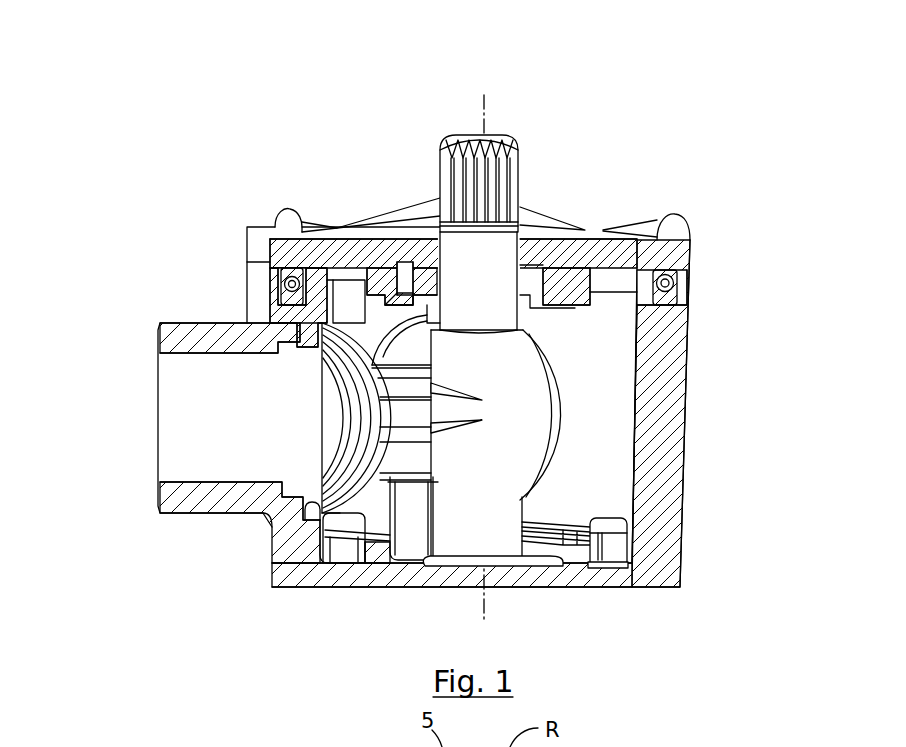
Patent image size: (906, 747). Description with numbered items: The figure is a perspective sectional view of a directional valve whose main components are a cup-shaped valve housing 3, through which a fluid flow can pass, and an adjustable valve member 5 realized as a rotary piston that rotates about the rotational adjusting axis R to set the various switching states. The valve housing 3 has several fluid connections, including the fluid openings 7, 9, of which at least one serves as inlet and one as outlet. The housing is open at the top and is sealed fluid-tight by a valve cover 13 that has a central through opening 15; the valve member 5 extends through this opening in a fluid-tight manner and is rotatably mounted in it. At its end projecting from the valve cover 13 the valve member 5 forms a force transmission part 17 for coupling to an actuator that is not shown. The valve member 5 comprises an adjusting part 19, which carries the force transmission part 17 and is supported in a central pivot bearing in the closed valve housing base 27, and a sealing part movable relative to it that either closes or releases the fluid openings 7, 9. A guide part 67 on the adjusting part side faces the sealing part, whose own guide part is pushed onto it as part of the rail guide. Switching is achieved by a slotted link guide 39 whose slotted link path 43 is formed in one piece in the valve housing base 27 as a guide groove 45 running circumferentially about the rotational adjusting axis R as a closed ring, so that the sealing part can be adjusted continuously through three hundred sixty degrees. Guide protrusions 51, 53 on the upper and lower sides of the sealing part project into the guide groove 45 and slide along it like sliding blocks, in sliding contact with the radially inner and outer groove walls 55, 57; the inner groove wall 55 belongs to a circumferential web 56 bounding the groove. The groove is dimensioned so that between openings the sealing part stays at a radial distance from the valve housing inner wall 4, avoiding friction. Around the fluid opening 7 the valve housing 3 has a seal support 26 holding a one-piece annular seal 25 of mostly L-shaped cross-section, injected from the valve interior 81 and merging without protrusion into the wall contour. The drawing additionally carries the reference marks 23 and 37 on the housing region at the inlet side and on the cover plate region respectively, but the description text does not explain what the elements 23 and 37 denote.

The valve housing 3 is at (698, 316).
The valve housing inner wall 4 is at (612, 312).
The valve member 5 is at (441, 112).
The fluid opening 7 is at (178, 366).
The fluid opening 9 is at (538, 362).
The valve cover 13 is at (262, 247).
The central through opening 15 is at (430, 197).
The force transmission part 17 is at (522, 160).
The adjusting part 19 is at (533, 563).
The valve seat ring 23 is at (325, 380).
The seal 25 is at (272, 527).
The seal support 26 is at (318, 502).
The valve housing base 27 is at (378, 575).
The cover plate 37 is at (500, 270).
The slotted link guide 39 is at (314, 310).
The slotted link path 43 is at (617, 567).
The guide groove 45 is at (598, 568).
The guide protrusion 51 is at (357, 302).
The guide protrusion 53 is at (350, 542).
The radially inner groove wall 55 is at (625, 520).
The circumferential web 56 is at (578, 545).
The groove wall 57 is at (565, 540).
The guide part 67 is at (412, 375).
The valve interior 81 is at (614, 375).
The rotational adjusting axis R is at (486, 122).